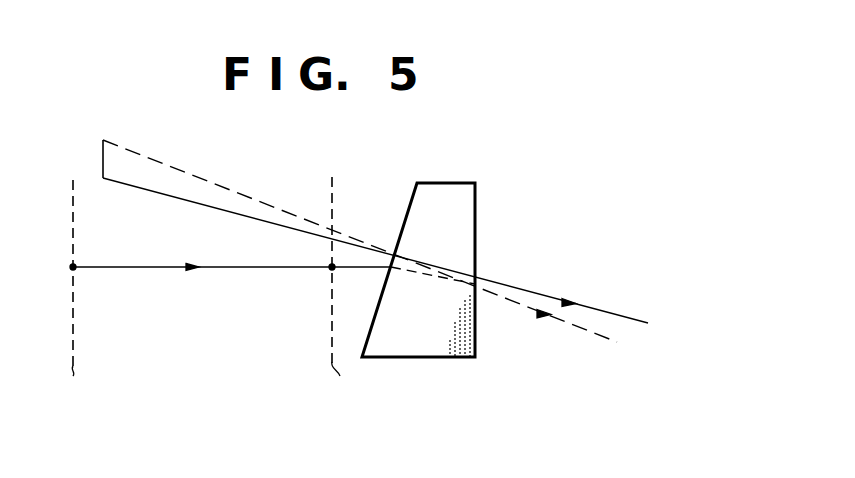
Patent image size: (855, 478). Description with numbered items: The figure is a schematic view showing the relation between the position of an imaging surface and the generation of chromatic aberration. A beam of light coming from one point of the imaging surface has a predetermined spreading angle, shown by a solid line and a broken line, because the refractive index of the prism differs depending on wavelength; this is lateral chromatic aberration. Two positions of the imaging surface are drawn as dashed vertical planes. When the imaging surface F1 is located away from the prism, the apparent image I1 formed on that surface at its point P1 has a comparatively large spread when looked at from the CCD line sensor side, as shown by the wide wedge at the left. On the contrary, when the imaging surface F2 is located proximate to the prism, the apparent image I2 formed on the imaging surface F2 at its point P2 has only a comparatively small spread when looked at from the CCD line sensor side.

The apparent image I1 is at (101, 160).
The apparent image I2 is at (362, 248).
The point on imaging surface F1 P1 is at (72, 270).
The point on imaging surface F2 P2 is at (331, 270).
The imaging surface F1 is at (78, 296).
The imaging surface F2 is at (355, 295).